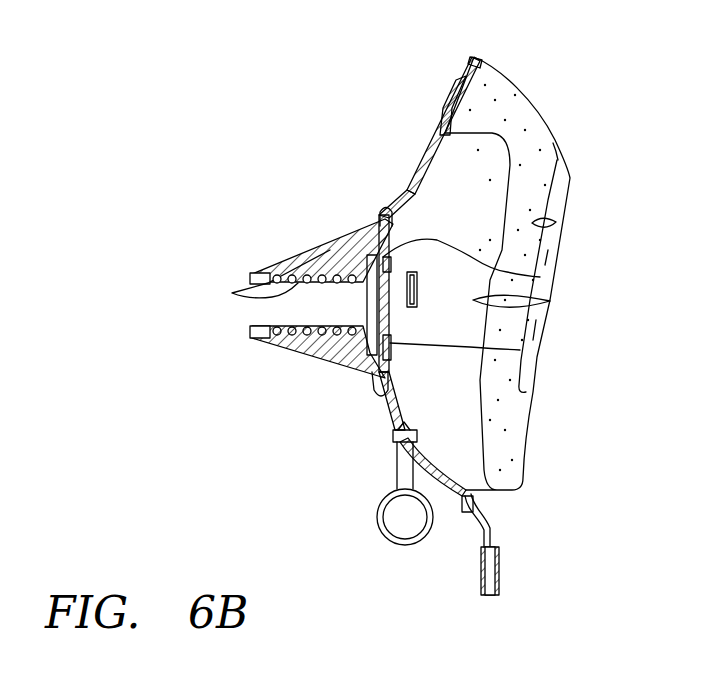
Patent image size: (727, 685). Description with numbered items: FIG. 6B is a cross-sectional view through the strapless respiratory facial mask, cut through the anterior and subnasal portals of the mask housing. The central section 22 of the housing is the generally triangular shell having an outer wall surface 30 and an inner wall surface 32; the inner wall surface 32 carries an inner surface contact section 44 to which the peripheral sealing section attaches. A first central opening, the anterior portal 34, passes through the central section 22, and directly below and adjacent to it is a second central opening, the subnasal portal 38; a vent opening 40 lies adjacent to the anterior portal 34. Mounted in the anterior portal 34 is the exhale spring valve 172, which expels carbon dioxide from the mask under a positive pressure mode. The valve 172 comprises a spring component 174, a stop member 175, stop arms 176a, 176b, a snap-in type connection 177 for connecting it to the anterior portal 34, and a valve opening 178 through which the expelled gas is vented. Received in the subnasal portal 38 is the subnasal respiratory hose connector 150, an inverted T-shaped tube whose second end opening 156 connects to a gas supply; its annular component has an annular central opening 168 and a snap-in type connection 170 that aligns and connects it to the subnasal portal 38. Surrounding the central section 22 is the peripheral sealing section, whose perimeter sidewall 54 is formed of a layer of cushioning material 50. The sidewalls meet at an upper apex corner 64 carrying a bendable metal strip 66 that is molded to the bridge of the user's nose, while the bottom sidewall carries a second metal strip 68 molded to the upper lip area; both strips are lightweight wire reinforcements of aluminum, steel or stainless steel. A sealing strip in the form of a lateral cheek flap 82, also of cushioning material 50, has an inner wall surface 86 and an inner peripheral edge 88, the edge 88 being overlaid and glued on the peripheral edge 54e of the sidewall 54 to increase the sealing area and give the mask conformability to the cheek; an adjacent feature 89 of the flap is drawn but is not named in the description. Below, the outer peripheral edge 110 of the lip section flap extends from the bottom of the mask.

The central section 22 is at (380, 430).
The outer wall surface 30 is at (420, 173).
The inner wall surface 32 is at (420, 398).
The anterior portal 34 is at (374, 316).
The subnasal portal 38 is at (418, 447).
The vent opening 40 is at (418, 280).
The inner surface contact section 44 is at (542, 327).
The cushioning material 50 is at (455, 117).
The perimeter sidewall 54 is at (530, 190).
The peripheral edge 54e is at (553, 143).
The upper apex corner 64 is at (490, 72).
The metal strip 66 is at (457, 65).
The second metal strip 68 is at (464, 502).
The lateral cheek flap 82 is at (580, 196).
The inner wall surface 86 is at (547, 257).
The inner peripheral edge 88 is at (550, 301).
The fastener 89 is at (556, 222).
The outer peripheral edge 110 is at (486, 594).
The subnasal respiratory hose connector 150 is at (392, 543).
The second end opening 156 is at (392, 520).
The annular central opening 168 is at (392, 436).
The snap-in type connection 170 is at (396, 462).
The exhale spring valve 172 is at (277, 367).
The spring component 174 is at (252, 290).
The stop member 175 is at (362, 309).
The stop arm 176a is at (540, 277).
The stop arm 176b is at (520, 350).
The snap-in type connection 177 is at (390, 254).
The valve opening 178 is at (270, 305).